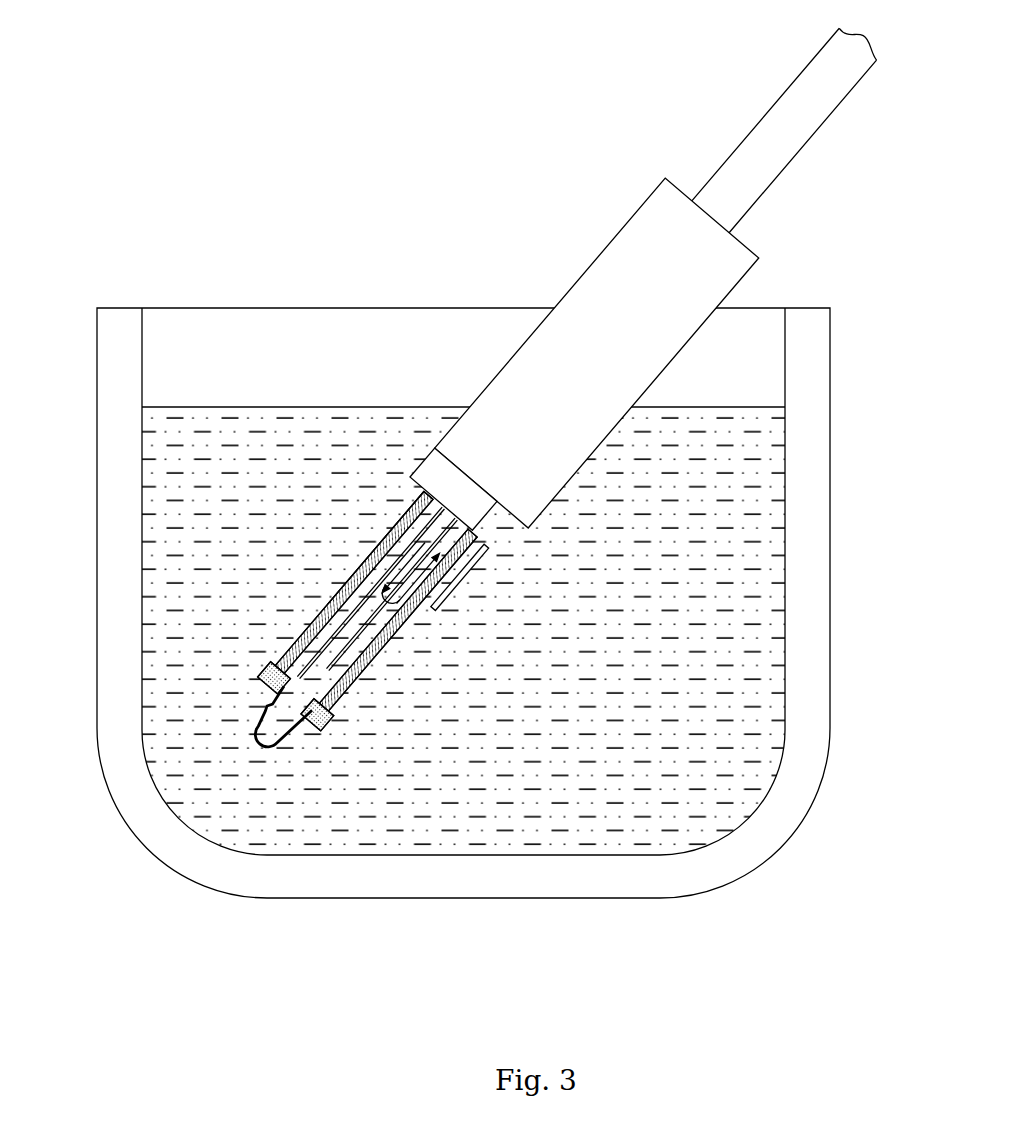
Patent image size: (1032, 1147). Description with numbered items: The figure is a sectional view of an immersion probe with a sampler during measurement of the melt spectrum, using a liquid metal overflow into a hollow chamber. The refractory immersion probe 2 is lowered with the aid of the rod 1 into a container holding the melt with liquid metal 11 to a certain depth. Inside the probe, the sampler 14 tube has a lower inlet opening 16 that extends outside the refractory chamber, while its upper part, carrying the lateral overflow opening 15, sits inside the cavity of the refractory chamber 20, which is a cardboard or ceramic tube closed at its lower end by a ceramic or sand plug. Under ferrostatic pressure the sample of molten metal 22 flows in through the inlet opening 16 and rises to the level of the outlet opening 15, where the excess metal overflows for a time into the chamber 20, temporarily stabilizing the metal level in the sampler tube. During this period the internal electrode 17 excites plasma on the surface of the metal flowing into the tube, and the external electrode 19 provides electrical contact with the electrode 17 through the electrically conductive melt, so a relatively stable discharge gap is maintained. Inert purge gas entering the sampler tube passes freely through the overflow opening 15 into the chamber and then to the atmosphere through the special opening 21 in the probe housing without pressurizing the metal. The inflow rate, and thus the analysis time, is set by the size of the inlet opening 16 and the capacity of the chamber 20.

The rod 1 is at (767, 142).
The immersion probe 2 is at (548, 358).
The liquid metal 11 is at (727, 570).
The sampler tube 14 is at (285, 653).
The overflow opening 15 is at (406, 592).
The inlet opening 16 is at (268, 712).
The internal electrode 17 is at (400, 553).
The external electrode 19 is at (472, 565).
The refractory chamber 20 is at (370, 542).
The special opening 21 is at (492, 520).
The sample of molten metal 22 is at (353, 630).